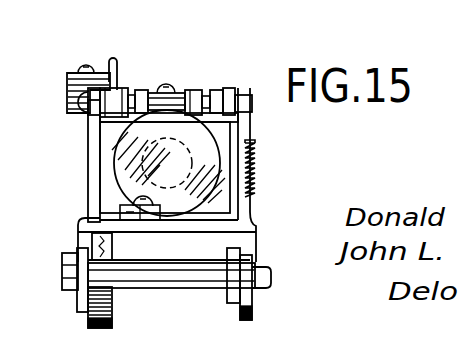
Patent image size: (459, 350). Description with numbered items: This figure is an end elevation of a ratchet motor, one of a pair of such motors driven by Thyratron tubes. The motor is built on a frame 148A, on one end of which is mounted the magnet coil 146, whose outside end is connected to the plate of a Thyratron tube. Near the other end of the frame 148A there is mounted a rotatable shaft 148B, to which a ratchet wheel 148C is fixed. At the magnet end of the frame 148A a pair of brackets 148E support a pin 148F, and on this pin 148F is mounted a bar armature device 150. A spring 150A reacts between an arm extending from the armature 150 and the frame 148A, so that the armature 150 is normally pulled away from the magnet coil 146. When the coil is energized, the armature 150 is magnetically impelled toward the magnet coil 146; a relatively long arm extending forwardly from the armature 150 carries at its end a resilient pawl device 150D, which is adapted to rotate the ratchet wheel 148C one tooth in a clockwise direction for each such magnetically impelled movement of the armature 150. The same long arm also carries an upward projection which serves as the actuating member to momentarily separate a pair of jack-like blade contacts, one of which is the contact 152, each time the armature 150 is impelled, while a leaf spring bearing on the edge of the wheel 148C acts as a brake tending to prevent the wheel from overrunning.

The magnet coil 146 is at (216, 146).
The frame 148A is at (236, 217).
The rotatable shaft 148B is at (258, 270).
The ratchet wheel 148C is at (112, 304).
The brackets 148E is at (96, 155).
The pin 148F is at (207, 93).
The bar armature device 150 is at (253, 185).
The spring 150A is at (256, 146).
The resilient pawl device 150D is at (113, 244).
The jack-like blade contact 152 is at (70, 73).